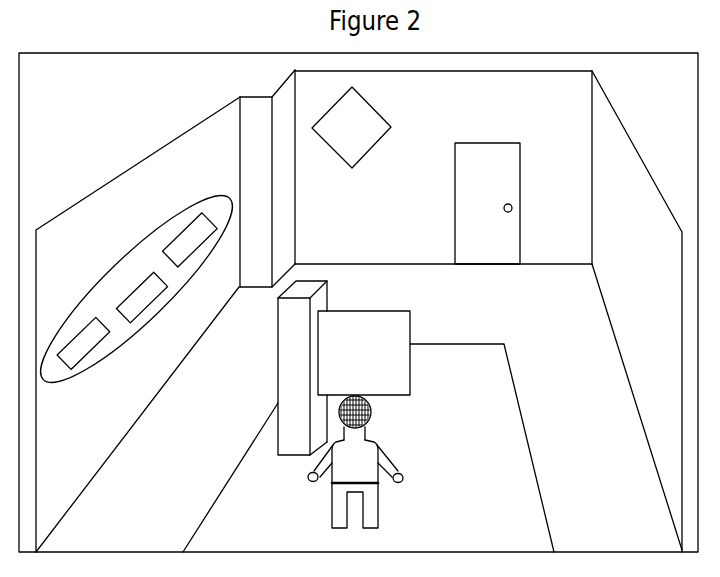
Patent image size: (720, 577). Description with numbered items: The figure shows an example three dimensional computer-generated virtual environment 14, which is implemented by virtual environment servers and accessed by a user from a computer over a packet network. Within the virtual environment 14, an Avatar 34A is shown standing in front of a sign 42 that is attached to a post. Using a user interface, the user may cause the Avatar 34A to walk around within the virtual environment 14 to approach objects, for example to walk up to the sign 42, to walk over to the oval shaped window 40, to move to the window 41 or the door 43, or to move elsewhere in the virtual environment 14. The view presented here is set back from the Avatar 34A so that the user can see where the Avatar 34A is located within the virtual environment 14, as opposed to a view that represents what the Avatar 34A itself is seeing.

The virtual environment 14 is at (60, 80).
The oval shaped window 40 is at (130, 252).
The window 41 is at (341, 136).
The sign 42 is at (357, 360).
The door 43 is at (478, 186).
The Avatar 34A is at (389, 499).